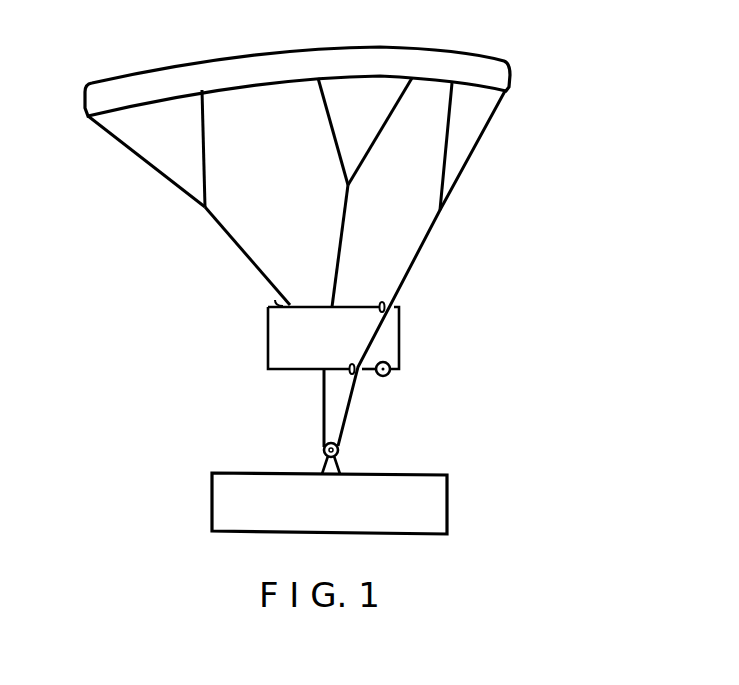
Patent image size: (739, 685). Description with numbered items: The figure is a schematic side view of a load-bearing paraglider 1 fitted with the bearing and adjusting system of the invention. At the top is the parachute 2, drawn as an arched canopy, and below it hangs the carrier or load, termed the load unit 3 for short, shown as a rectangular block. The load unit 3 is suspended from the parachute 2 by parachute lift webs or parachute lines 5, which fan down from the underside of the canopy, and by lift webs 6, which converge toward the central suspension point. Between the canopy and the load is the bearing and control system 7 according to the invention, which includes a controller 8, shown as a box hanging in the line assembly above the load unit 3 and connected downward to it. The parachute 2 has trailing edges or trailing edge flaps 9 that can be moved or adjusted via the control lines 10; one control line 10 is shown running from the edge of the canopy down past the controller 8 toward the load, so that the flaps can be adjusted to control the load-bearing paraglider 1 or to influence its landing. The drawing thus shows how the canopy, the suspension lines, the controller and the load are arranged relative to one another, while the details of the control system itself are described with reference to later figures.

The load-bearing paraglider 1 is at (537, 213).
The parachute 2 is at (121, 88).
The load unit 3 is at (448, 497).
The parachute lines 5 is at (120, 139).
The lift webs 6 is at (338, 250).
The bearing and control system 7 is at (461, 400).
The controller 8 is at (413, 343).
The trailing edge flap 9 is at (481, 62).
The control lines 10 is at (428, 233).